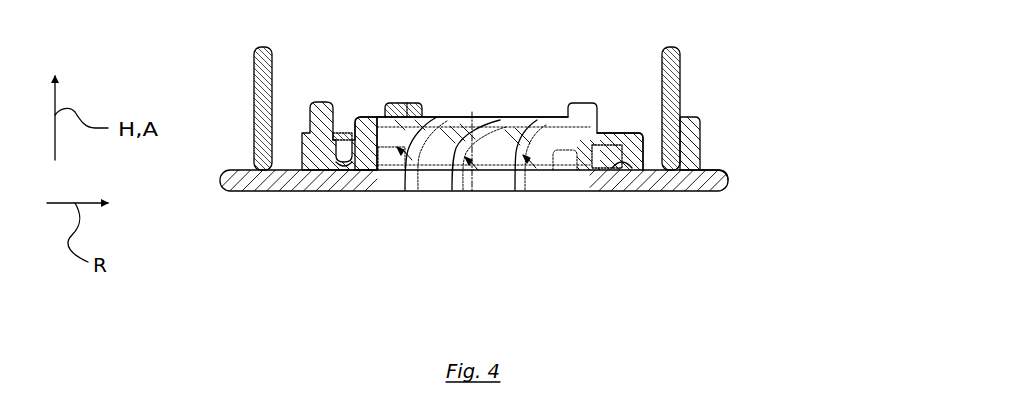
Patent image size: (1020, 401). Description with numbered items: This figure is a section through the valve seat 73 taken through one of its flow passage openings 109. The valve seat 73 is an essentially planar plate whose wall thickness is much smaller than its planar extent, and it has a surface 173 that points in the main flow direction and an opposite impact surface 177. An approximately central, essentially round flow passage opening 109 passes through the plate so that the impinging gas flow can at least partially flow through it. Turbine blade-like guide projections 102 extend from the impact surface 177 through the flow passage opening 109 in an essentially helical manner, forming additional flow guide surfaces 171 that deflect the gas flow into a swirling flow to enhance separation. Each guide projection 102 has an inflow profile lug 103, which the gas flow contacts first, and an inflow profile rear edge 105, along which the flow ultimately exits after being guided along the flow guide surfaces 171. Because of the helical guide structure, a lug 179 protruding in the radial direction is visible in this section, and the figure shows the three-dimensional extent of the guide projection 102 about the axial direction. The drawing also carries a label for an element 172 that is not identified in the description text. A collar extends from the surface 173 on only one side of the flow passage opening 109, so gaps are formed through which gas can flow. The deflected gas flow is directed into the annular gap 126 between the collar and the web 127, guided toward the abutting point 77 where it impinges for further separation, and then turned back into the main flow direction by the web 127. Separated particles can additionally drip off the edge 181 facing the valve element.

The valve seat 73 is at (270, 219).
The abutting point 77 is at (320, 172).
The guide projection 102 is at (452, 165).
The inflow profile lug 103 is at (375, 170).
The inflow profile rear edge 105 is at (432, 117).
The flow passage opening 109 is at (542, 245).
The annular gap 126 is at (343, 134).
The web 127 is at (300, 133).
The flow guide surface 171 is at (358, 117).
The outlet block 172 is at (596, 130).
The surface 173 is at (710, 168).
The impact surface 177 is at (700, 190).
The lug 179 is at (400, 103).
The edge 181 is at (328, 103).